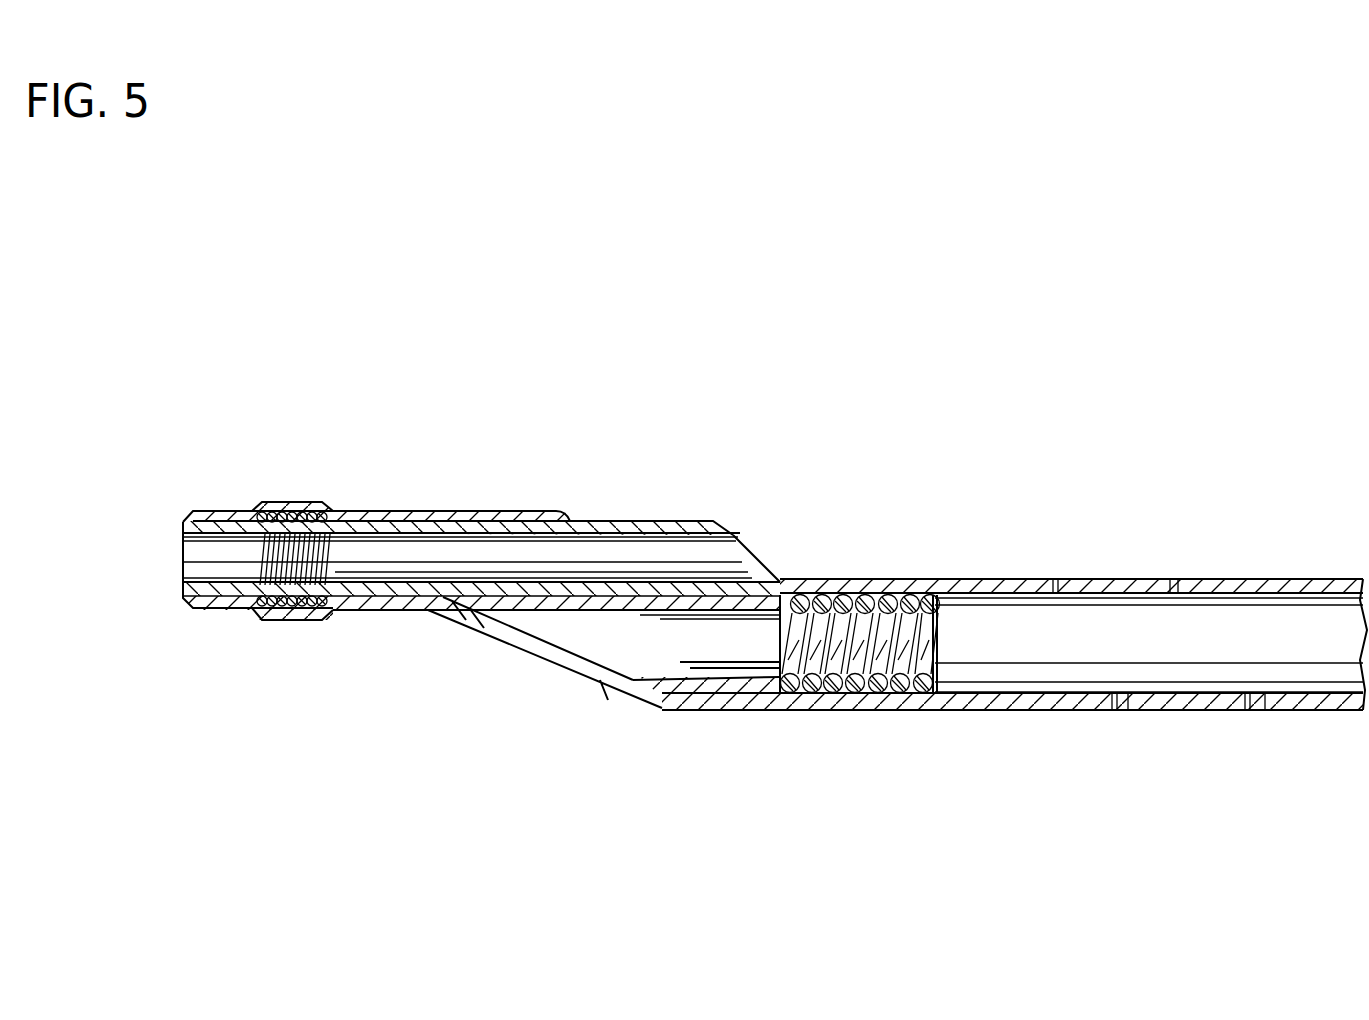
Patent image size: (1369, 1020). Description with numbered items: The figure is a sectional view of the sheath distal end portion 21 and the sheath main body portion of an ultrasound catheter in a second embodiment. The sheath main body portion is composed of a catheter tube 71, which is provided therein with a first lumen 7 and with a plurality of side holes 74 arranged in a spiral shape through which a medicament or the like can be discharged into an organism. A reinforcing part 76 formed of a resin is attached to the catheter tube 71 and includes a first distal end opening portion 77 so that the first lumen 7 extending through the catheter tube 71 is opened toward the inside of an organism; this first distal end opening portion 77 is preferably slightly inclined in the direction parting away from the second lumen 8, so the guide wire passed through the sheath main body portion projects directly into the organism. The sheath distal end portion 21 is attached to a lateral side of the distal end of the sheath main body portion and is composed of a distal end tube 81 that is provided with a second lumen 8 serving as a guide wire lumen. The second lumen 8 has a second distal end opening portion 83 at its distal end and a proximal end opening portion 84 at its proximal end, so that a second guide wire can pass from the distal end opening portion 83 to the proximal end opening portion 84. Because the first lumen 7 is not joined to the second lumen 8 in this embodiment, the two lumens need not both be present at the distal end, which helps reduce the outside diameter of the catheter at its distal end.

The sheath distal end portion 21 is at (484, 458).
The second distal end opening portion 83 is at (183, 548).
The distal end tube 81 is at (694, 521).
The second lumen 8 is at (609, 560).
The proximal end opening portion 84 is at (754, 558).
The first distal end opening portion 77 is at (558, 660).
The reinforcing part 76 is at (726, 684).
The catheter tube 71 is at (1118, 579).
The side holes 74 is at (1184, 580).
The first lumen 7 is at (1208, 664).